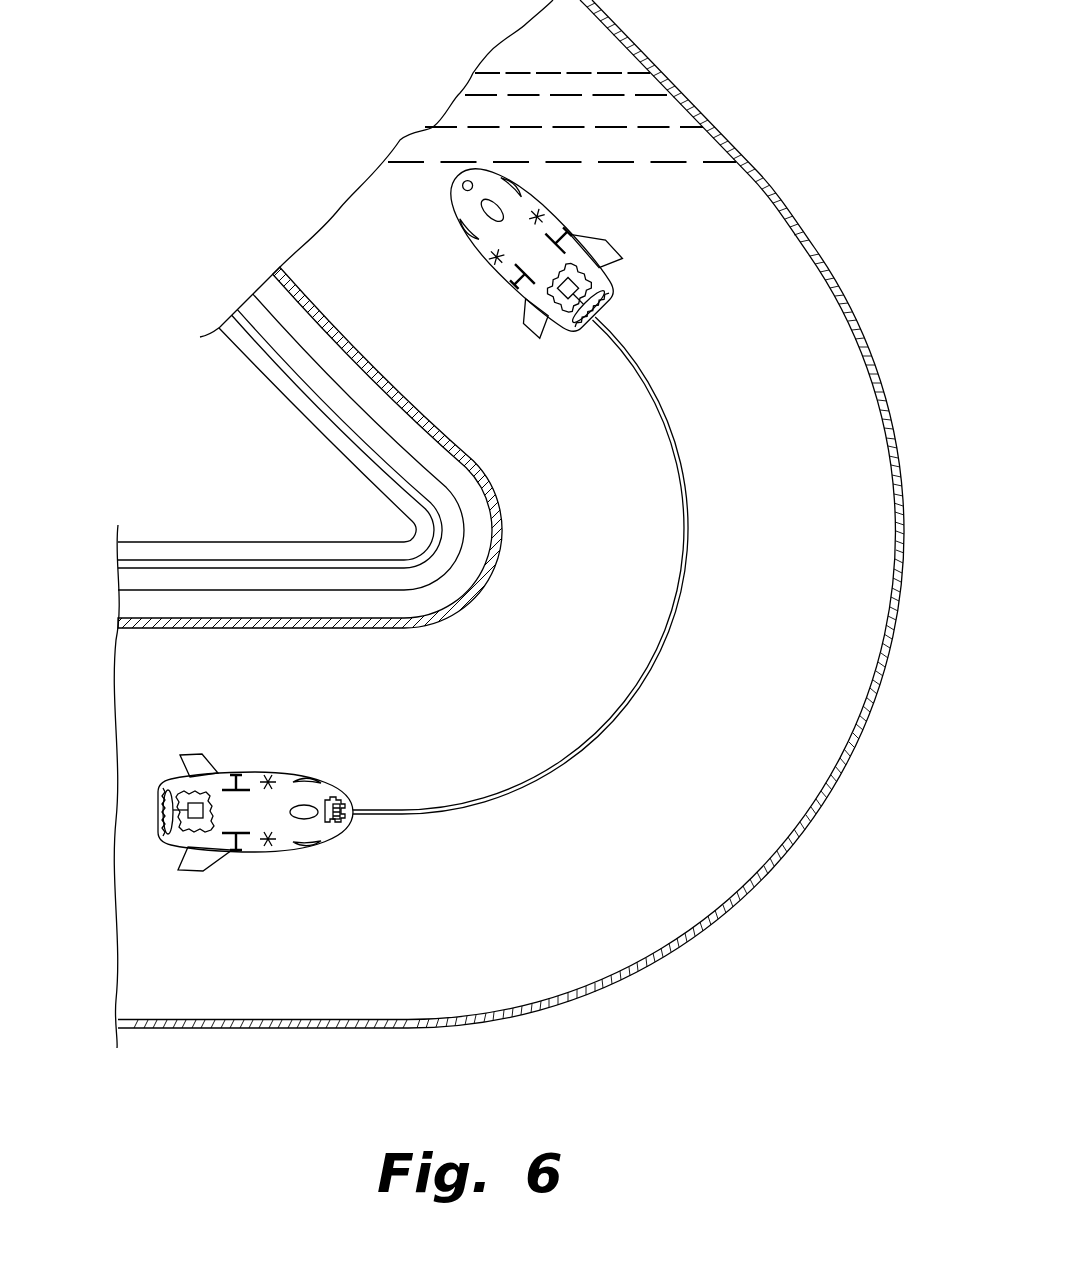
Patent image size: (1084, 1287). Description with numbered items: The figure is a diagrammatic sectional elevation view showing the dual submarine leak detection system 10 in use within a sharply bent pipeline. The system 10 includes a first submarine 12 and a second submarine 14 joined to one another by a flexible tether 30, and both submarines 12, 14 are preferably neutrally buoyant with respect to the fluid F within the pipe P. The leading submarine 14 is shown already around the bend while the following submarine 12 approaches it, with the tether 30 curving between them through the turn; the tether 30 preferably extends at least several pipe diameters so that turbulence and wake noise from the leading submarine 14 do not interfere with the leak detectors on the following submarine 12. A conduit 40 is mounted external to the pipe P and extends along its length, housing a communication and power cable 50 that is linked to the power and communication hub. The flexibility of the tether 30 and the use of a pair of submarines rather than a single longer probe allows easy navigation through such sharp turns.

The dual submarine leak detection system 10 is at (511, 514).
The first submarine 12 is at (333, 883).
The second submarine 14 is at (675, 276).
The tether 30 is at (681, 457).
The conduit 40 is at (282, 447).
The communication and power cable 50 is at (202, 558).
The pipe P is at (838, 853).
The fluid F is at (793, 646).